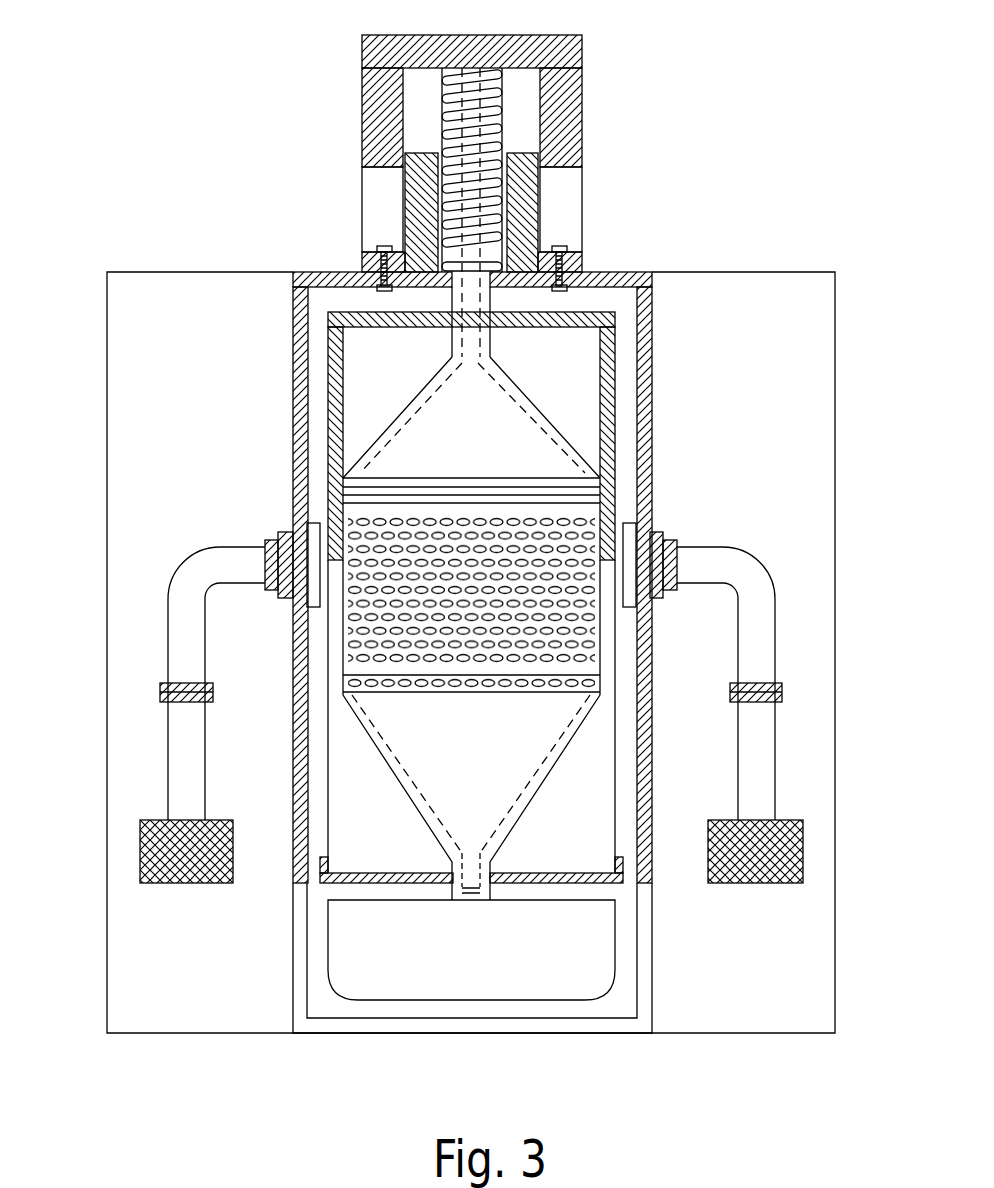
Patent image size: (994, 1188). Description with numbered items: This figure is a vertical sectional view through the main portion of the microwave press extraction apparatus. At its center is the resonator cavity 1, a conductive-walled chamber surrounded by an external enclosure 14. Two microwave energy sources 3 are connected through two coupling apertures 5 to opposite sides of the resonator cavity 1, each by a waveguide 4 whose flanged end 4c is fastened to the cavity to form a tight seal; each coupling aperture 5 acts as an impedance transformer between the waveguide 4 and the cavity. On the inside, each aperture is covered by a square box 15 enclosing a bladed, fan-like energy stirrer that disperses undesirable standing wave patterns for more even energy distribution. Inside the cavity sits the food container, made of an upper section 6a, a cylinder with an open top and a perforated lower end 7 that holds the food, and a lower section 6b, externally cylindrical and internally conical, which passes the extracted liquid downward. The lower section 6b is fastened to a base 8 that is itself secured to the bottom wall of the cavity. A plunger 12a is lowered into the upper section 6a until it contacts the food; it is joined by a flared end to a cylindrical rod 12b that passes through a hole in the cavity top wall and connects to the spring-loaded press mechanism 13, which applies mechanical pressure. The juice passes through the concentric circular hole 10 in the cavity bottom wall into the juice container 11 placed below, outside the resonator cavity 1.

The resonator cavity 1 is at (652, 342).
The microwave energy source 3 is at (153, 853).
The waveguide 4 is at (168, 727).
The flanged end 4c is at (670, 555).
The coupling aperture 5 is at (283, 535).
The upper section 6a is at (360, 388).
The lower section 6b is at (348, 795).
The perforated lower end 7 is at (462, 688).
The base 8 is at (337, 873).
The concentric circular hole 10 is at (467, 878).
The juice container 11 is at (583, 983).
The plunger 12a is at (463, 448).
The cylindrical rod 12b is at (490, 335).
The press mechanism 13 is at (582, 100).
The external enclosure 14 is at (742, 272).
The square box 15 is at (313, 523).